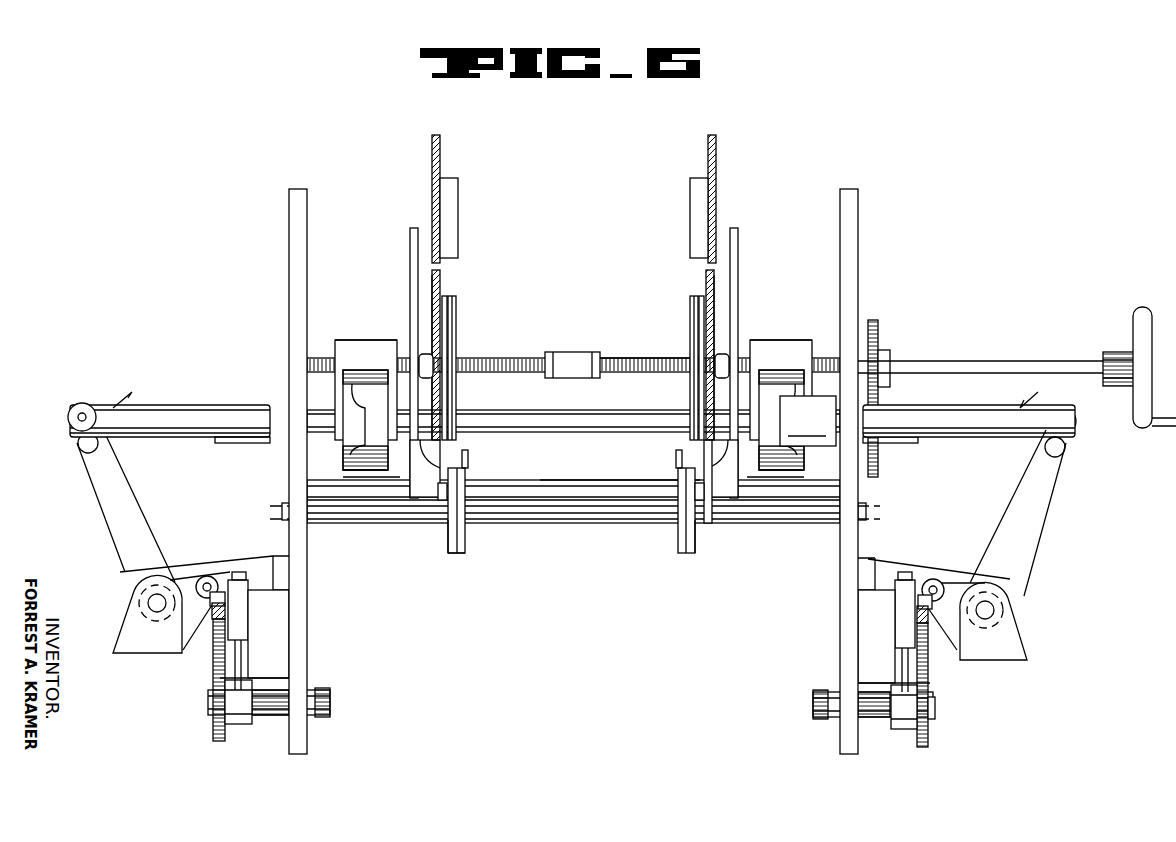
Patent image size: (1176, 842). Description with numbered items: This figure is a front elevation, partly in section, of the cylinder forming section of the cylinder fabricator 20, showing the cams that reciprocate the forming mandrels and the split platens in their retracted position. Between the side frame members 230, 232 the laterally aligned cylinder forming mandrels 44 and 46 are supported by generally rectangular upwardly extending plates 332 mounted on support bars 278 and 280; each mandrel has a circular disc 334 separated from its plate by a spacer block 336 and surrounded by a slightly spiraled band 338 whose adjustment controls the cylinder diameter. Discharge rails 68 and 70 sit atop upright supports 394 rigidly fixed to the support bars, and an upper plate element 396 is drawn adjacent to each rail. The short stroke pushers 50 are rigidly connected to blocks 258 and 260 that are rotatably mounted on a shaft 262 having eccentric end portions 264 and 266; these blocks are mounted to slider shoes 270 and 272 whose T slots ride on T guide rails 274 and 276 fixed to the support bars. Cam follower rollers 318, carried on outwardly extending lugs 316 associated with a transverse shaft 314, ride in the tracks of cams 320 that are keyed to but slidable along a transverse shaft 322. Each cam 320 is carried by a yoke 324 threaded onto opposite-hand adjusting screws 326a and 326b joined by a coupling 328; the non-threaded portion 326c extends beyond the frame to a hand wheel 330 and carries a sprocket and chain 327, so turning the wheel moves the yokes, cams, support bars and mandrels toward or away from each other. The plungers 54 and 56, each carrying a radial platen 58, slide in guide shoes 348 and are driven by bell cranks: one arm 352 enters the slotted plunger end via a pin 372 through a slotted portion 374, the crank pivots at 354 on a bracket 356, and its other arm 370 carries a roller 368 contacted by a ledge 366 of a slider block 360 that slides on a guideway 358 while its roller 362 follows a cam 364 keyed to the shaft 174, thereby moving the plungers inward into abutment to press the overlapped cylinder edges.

The cylinder fabricator 20 is at (985, 170).
The cylinder forming mandrel 44 is at (428, 276).
The cylinder forming mandrel 46 is at (719, 276).
The short stroke pushers 50 is at (468, 460).
The plunger 54 is at (157, 406).
The plunger 56 is at (998, 430).
The platen 58 is at (240, 444).
The discharge rail 68 is at (455, 196).
The discharge rail 70 is at (708, 195).
The shaft 174 is at (330, 708).
The side frame member 230 is at (289, 240).
The side frame member 232 is at (858, 256).
The block 258 is at (458, 555).
The block 260 is at (690, 556).
The shaft 262 is at (585, 495).
The eccentric end portion 264 is at (282, 508).
The eccentric end portion 266 is at (866, 508).
The slider shoe 270 is at (445, 560).
The slider shoe 272 is at (703, 555).
The T guide rail 274 is at (447, 500).
The T guide rail 276 is at (698, 494).
The support bar 278 is at (418, 492).
The support bar 280 is at (719, 492).
The transverse shaft 314 is at (590, 500).
The lug 316 is at (384, 482).
The cam follower roller 318 is at (378, 476).
The cam 320 is at (348, 370).
The transverse shaft 322 is at (533, 418).
The yoke 324 is at (388, 340).
The adjusting screw 326a is at (532, 357).
The adjusting screw 326b is at (630, 357).
The non-threaded portion 326c is at (1015, 362).
The sprocket and chain 327 is at (878, 325).
The coupling 328 is at (572, 362).
The hand wheel 330 is at (1140, 333).
The plate 332 is at (440, 280).
The circular disc 334 is at (456, 340).
The spacer block 336 is at (443, 380).
The band 338 is at (447, 298).
The guide shoe 348 is at (808, 421).
The arm 352 is at (118, 527).
The pivot 354 is at (148, 603).
The bracket 356 is at (127, 655).
The guideway 358 is at (275, 660).
The slider block 360 is at (245, 630).
The cam follower roller 362 is at (212, 610).
The cam 364 is at (212, 738).
The ledge 366 is at (237, 562).
The roller 368 is at (207, 578).
The arm 370 is at (143, 572).
The pin 372 is at (78, 416).
The slotted portion 374 is at (80, 440).
The upright support 394 is at (410, 280).
The plate 396 is at (440, 160).